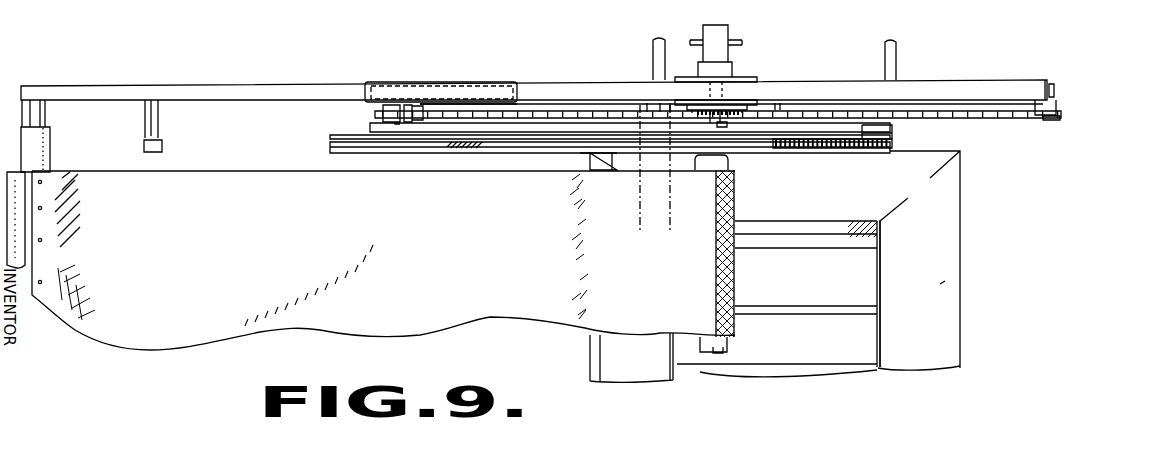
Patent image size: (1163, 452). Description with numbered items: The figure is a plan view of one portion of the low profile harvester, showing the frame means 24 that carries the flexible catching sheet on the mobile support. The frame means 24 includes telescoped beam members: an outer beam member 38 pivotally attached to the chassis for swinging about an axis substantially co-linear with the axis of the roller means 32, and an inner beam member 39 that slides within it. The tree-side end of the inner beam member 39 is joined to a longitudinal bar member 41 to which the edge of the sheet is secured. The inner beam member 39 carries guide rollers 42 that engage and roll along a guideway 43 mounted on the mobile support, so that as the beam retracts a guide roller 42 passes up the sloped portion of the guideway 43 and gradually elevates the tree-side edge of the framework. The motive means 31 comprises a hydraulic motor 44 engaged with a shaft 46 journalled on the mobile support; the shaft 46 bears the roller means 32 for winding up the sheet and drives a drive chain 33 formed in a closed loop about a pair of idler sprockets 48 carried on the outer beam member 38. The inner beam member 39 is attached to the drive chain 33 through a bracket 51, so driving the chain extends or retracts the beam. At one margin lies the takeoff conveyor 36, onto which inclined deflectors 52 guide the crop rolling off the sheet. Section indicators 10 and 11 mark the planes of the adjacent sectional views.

The section line 10- 10 is at (338, 123).
The section line 11- 11 is at (288, 150).
The frame means 24 is at (486, 83).
The motive means 31 is at (737, 62).
The roller means 32 is at (730, 201).
The drive chain 33 is at (533, 112).
The takeoff conveyor 36 is at (960, 237).
The outer beam member 38 is at (433, 82).
The inner beam member 39 is at (185, 97).
The longitudinal bar member 41 is at (50, 155).
The guide rollers 42 is at (162, 146).
The guideway 43 is at (430, 148).
The hydraulic motor 44 is at (728, 31).
The shaft 46 is at (700, 163).
The idler sprockets 48 is at (381, 115).
The bracket 51 is at (404, 108).
The inclined deflectors 52 is at (940, 285).